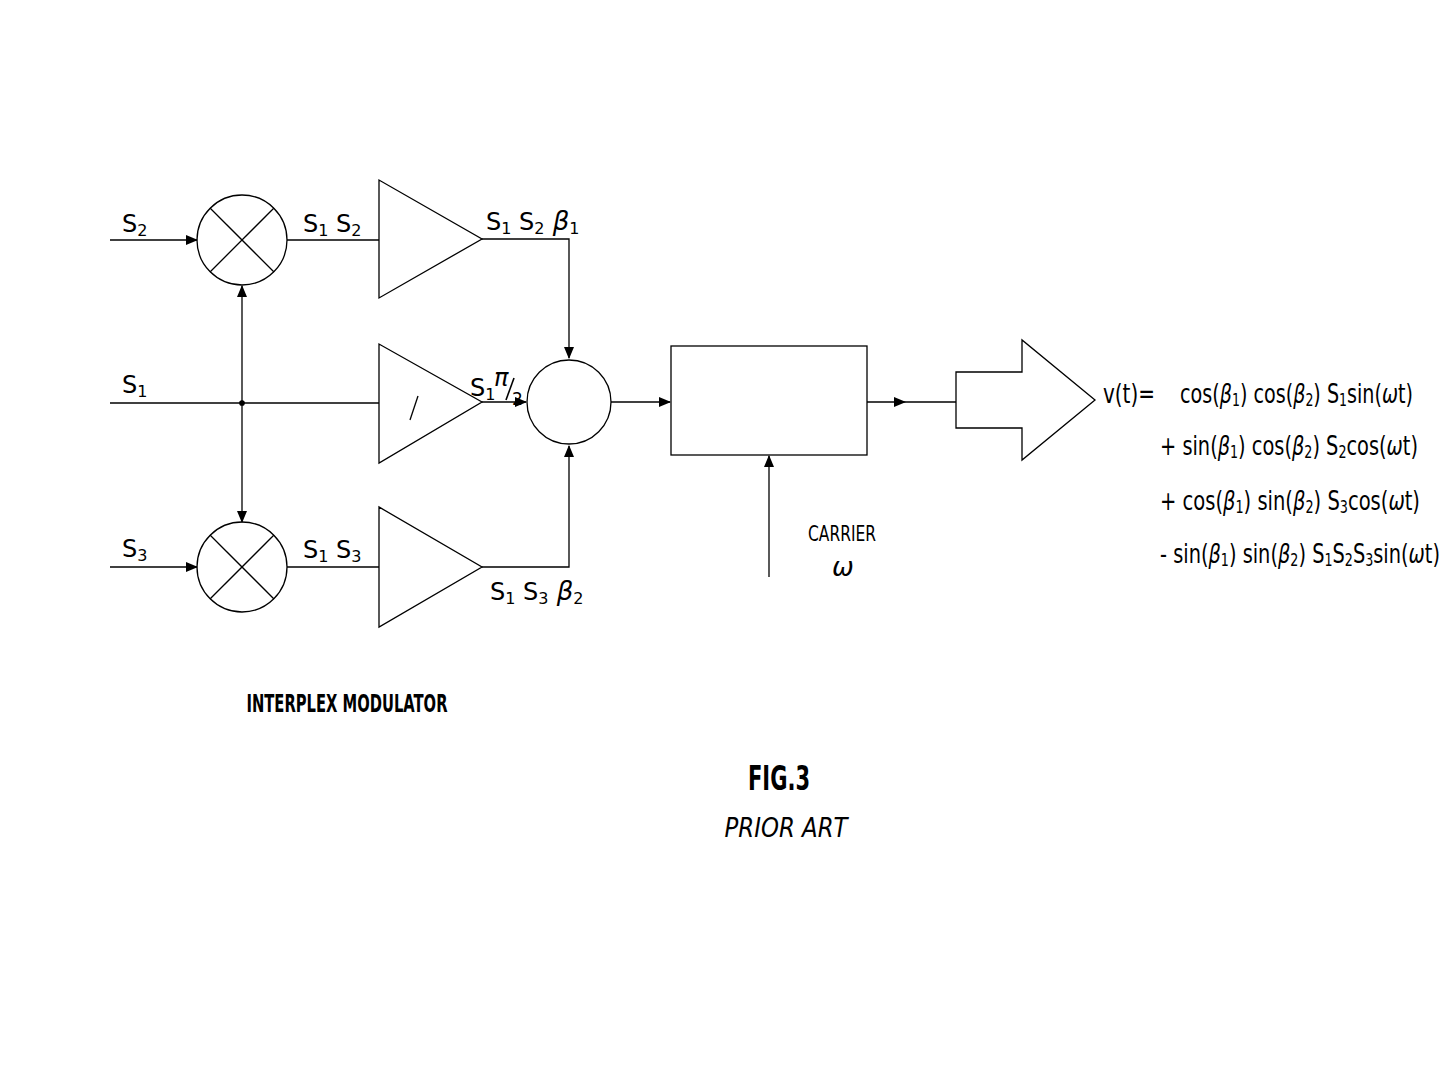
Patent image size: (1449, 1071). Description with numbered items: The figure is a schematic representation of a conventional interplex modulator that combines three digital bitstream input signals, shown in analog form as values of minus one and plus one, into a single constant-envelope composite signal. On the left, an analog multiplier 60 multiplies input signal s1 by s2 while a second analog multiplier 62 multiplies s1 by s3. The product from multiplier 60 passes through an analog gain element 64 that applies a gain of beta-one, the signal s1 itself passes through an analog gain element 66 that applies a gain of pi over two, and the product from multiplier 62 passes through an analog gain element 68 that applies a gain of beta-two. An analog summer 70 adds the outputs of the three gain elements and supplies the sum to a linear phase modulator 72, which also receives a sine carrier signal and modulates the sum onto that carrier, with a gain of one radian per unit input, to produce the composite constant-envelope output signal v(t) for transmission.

The analog multiplier 60 is at (224, 194).
The analog multiplier 62 is at (242, 612).
The analog gain element 64 is at (430, 205).
The analog gain element 66 is at (432, 372).
The analog gain element 68 is at (428, 534).
The analog summer 70 is at (601, 371).
The linear phase modulator 72 is at (768, 346).